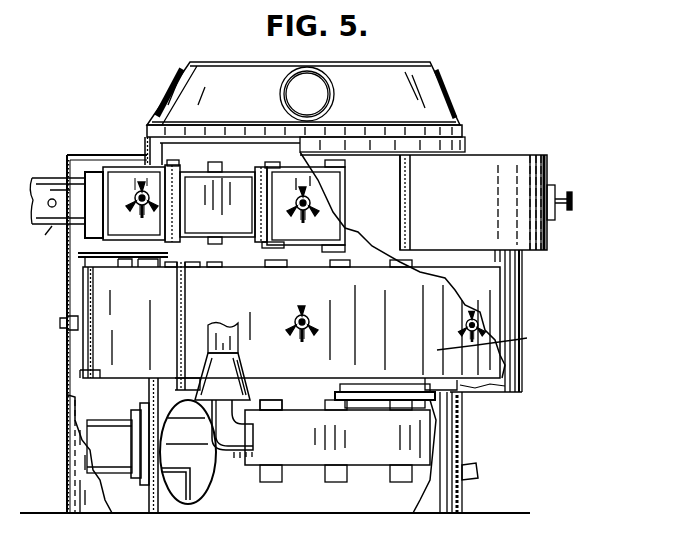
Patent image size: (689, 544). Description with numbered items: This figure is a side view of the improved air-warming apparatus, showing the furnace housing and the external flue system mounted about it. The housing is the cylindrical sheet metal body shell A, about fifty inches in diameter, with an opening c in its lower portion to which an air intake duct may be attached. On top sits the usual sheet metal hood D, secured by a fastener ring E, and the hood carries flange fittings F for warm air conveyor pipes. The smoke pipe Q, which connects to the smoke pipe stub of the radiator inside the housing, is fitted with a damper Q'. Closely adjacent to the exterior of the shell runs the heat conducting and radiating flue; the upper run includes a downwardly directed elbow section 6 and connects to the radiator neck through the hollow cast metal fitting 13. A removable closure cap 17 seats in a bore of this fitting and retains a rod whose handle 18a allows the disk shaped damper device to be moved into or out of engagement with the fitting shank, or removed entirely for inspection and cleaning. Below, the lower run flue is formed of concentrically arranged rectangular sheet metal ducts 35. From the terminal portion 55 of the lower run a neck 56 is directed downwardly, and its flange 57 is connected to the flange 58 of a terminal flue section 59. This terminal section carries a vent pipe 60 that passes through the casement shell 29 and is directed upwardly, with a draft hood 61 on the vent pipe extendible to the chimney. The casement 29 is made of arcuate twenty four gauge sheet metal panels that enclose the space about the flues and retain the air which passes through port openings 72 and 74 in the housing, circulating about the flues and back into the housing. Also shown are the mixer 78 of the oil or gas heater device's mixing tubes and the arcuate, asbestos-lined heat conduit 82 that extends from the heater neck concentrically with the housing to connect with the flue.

The elbow section 6 is at (70, 238).
The hollow cast metal fitting 13 is at (284, 268).
The removable closure cap 17 is at (556, 190).
The handle 18a is at (573, 203).
The casement shell 29 is at (545, 238).
The sheet metal duct 35 is at (362, 282).
The terminal portion 55 is at (493, 338).
The neck 56 is at (380, 390).
The flange 57 is at (375, 394).
The flange 58 is at (404, 404).
The terminal flue section 59 is at (316, 458).
The vent pipe 60 is at (232, 458).
The draft hood 61 is at (246, 370).
The port opening 72 is at (215, 164).
The port opening 74 is at (280, 408).
The mixer 78 is at (470, 470).
The heat conduit 82 is at (92, 419).
The body shell A is at (173, 148).
The hood D is at (214, 68).
The fastener ring E is at (205, 124).
The flange fitting F is at (333, 83).
The smoke pipe Q is at (57, 183).
The damper Q' is at (38, 245).
The opening c is at (188, 452).